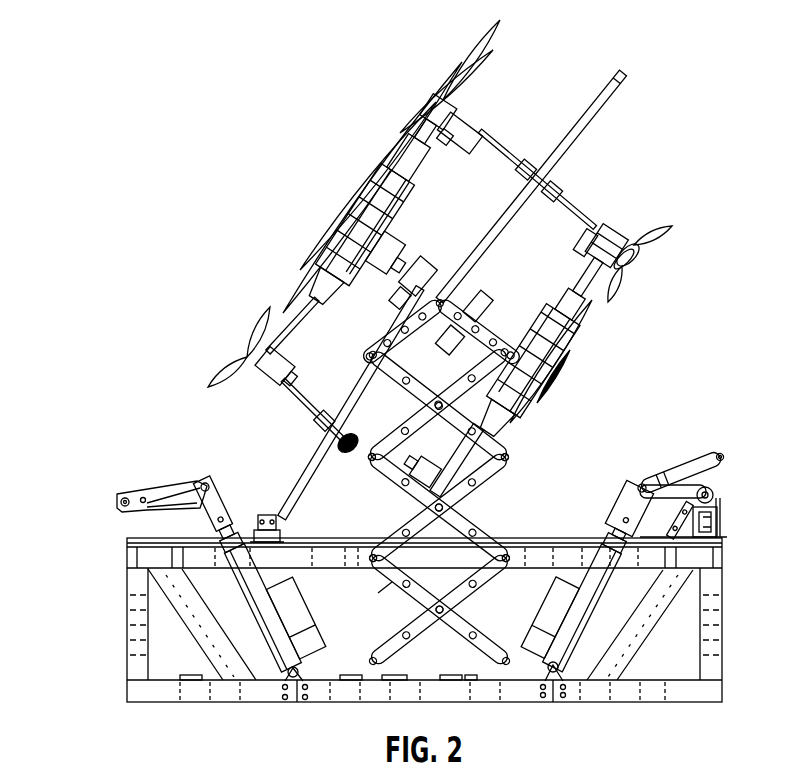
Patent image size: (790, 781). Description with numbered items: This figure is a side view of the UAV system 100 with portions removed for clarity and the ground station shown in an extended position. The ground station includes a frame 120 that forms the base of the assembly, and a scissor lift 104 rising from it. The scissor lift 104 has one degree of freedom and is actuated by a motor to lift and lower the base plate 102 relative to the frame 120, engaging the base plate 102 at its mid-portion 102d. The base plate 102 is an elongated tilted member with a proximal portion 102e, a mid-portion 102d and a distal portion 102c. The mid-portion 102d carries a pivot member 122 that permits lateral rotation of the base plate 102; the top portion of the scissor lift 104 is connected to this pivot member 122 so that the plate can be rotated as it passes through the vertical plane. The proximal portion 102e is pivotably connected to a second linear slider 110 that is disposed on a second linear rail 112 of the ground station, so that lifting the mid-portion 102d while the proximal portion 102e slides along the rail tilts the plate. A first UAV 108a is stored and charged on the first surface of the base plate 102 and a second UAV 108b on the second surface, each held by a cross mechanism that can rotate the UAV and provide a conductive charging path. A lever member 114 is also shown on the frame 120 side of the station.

The aerial vehicle launch and recovery system 100 is at (121, 30).
The base plate 102 is at (573, 138).
The distal portion 102c is at (622, 73).
The mid-portion 102d is at (456, 291).
The proximal portion 102e is at (315, 462).
The scissor lift 104 is at (512, 458).
The first UAV 108a is at (370, 180).
The second UAV 108b is at (567, 340).
The second linear slider 110 is at (290, 517).
The second linear rail 112 is at (137, 537).
The right tilt lever arm 114 is at (692, 462).
The frame 120 is at (126, 626).
The pivot member 122 is at (450, 288).